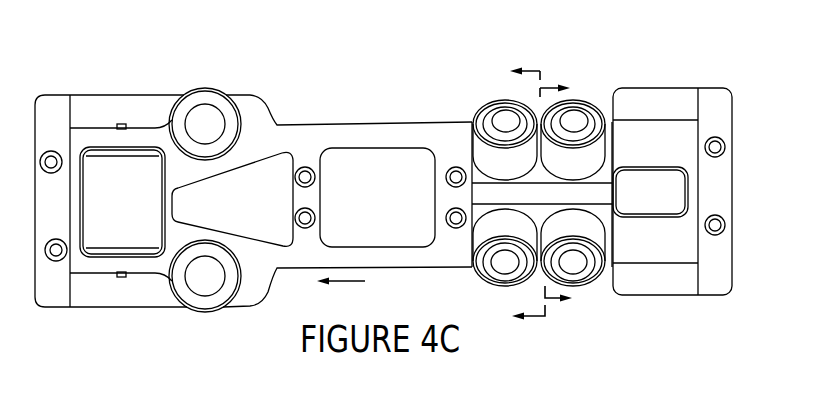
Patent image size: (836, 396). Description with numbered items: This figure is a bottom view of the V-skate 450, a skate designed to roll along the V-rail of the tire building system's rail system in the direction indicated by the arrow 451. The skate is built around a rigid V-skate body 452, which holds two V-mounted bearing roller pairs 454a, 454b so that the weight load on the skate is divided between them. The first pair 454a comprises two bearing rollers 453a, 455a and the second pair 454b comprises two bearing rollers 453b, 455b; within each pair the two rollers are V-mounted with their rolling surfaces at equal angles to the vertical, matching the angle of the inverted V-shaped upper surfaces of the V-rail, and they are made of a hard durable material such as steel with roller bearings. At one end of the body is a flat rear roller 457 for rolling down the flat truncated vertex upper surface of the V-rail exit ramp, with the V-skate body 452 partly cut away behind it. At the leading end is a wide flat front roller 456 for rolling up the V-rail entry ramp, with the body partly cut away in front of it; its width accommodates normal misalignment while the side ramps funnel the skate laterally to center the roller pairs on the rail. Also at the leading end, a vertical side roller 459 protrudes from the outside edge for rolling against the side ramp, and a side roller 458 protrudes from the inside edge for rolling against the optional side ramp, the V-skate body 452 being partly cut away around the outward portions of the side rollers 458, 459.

The V-skate 450 is at (320, 52).
The arrow 451 is at (343, 293).
The V-skate body 452 is at (335, 124).
The bearing roller 453a is at (503, 160).
The bearing roller 453b is at (590, 160).
The V-mounted bearing roller pair 454a is at (498, 188).
The V-mounted bearing roller pair 454b is at (588, 187).
The bearing roller 455a is at (493, 232).
The bearing roller 455b is at (590, 228).
The front roller 456 is at (120, 170).
The rear roller 457 is at (672, 190).
The side roller 458 is at (205, 88).
The vertical side roller 459 is at (208, 312).